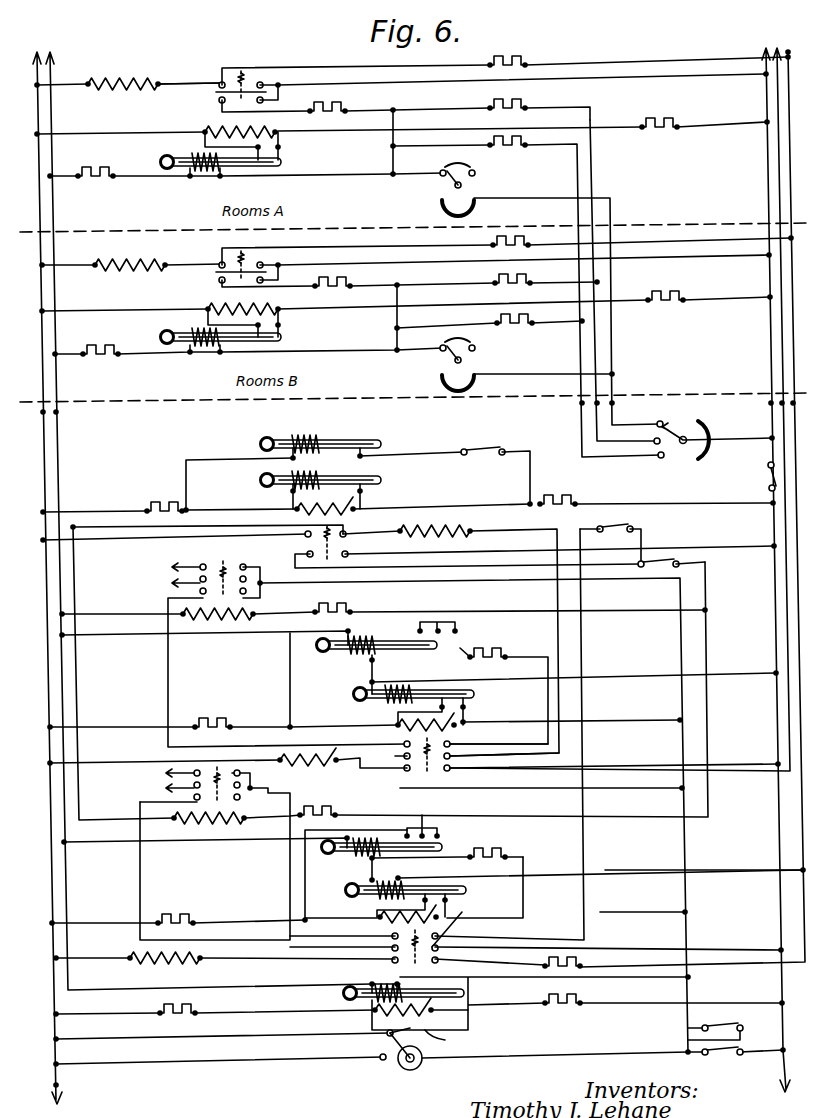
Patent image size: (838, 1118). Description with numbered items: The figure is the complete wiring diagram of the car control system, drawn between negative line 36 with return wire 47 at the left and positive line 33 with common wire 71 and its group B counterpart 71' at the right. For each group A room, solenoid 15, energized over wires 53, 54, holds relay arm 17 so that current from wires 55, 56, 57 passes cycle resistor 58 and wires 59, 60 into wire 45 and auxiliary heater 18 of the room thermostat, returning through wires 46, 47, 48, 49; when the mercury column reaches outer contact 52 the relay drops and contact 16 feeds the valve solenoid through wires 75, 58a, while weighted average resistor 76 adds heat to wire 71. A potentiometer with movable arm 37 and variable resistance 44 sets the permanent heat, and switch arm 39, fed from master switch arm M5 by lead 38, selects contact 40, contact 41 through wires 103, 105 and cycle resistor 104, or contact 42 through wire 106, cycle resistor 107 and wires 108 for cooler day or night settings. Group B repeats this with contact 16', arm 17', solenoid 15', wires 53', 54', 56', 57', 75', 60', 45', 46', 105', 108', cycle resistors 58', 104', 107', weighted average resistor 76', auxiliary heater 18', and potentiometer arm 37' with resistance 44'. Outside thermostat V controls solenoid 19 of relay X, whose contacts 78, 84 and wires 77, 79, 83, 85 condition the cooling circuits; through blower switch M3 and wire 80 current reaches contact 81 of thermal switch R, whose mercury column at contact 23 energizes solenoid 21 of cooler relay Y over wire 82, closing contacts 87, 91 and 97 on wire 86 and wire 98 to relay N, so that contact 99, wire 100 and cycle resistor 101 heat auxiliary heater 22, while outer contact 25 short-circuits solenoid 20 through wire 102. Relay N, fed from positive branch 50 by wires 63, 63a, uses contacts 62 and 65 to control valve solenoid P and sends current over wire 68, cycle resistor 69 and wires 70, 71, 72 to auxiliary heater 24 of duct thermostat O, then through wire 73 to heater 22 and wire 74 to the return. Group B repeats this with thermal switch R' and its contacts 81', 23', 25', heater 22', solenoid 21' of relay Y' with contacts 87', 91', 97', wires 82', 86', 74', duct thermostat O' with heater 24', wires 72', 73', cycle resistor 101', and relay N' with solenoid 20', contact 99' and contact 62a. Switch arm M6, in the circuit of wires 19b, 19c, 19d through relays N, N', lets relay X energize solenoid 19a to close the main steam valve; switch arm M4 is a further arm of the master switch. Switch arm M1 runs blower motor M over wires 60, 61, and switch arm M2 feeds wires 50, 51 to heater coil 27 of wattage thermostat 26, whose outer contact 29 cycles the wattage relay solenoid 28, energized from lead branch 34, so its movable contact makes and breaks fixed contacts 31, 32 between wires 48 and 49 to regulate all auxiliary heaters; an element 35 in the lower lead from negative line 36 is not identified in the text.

The negative line 36 is at (32, 56).
The wire 47 is at (78, 884).
The wire 71 is at (620, 458).
The wire 71' is at (749, 556).
The positive line 33 is at (716, 50).
The wire 59 is at (68, 84).
The wire 58a is at (177, 82).
The relay contact 16 is at (502, 67).
The wire 56 is at (513, 73).
The wire 75 is at (342, 59).
The weighted average resistor 76 is at (519, 56).
The relay arm 17 is at (245, 102).
The wire 57 is at (241, 107).
The cycle resistor 58 is at (350, 100).
The wire 55 is at (441, 98).
The wires 105 is at (484, 98).
The cycle resistor 104 is at (555, 101).
The wires 103 is at (584, 114).
The wire 54 is at (121, 123).
The solenoid 15 is at (215, 136).
The outer contact 52 is at (288, 162).
The wire 46 is at (246, 165).
The auxiliary heater 18 is at (189, 200).
The wire 60 is at (375, 142).
The wires 108 is at (441, 136).
The cycle resistor 107 is at (575, 292).
The wire 53 is at (522, 135).
The variable resistance 44 is at (481, 187).
The movable arm 37 is at (534, 306).
The wire 45 is at (328, 188).
The relay contact 16' is at (503, 257).
The wire 56' is at (514, 261).
The relay arm 17' is at (245, 278).
The wire 75' is at (386, 240).
The weighted average resistor 76' is at (523, 237).
The cycle resistor 58' is at (354, 277).
The wires 105' is at (465, 274).
The cycle resistor 104' is at (560, 271).
The wire 54' is at (125, 303).
The solenoid 15' is at (216, 320).
The wire 57' is at (296, 299).
The wire 46' is at (249, 364).
The auxiliary heater 18' is at (187, 371).
The wire 60' is at (379, 317).
The wires 108' is at (447, 317).
The cycle resistor 107' is at (538, 315).
The wire 53' is at (524, 289).
The variable resistance 44' is at (483, 364).
The movable arm 37' is at (508, 373).
The wire 45' is at (348, 368).
The wire 106 is at (612, 363).
The contact 40 is at (657, 410).
The contact 41 is at (654, 458).
The contact 42 is at (662, 458).
The three position switch arm 39 is at (686, 446).
The lead 38 is at (738, 436).
The switch arm M5 is at (768, 484).
The wire 83 is at (106, 520).
The solenoid 19 is at (296, 506).
The outside thermostat V is at (325, 484).
The switch arm M4 is at (486, 450).
The wire 85 is at (146, 538).
The relay X is at (210, 545).
The relay contact 84 is at (353, 546).
The relay contact 78 is at (358, 570).
The wire 77 is at (734, 546).
The wire 79 is at (460, 560).
The solenoid 19a is at (434, 523).
The switch arm M6 is at (610, 535).
The blower switch M3 is at (658, 578).
The wire 80 is at (710, 648).
The cooler relay Y' is at (209, 574).
The relay contact 87' is at (243, 550).
The wire 86' is at (467, 811).
The relay contact 97' is at (234, 670).
The relay contact 91' is at (266, 602).
The wire 82' is at (479, 604).
The actuating solenoid 21' is at (206, 654).
The wire 74' is at (257, 645).
The wire 102 is at (278, 669).
The auxiliary heater 22' is at (333, 664).
The thermal switch R' is at (400, 638).
The contact 81' is at (401, 635).
The contact 23' is at (451, 606).
The outer contact 25' is at (480, 612).
The wire 19d is at (557, 615).
The cycle resistor 101' is at (499, 688).
The wire 73' is at (572, 666).
The duct thermostat O' is at (424, 705).
The auxiliary heater 24' is at (343, 711).
The wire 72' is at (571, 707).
The relay contact 99' is at (494, 717).
The solenoid 20' is at (253, 731).
The relay N' is at (591, 751).
The wire 19b is at (578, 752).
The relay contact 62a is at (340, 759).
The relay contact 87 is at (256, 763).
The cooler relay Y is at (190, 785).
The relay contact 91 is at (254, 802).
The actuating solenoid 21 is at (235, 841).
The wire 82 is at (335, 805).
The relay contact 97 is at (207, 844).
The wire 74 is at (259, 851).
The wire 19c is at (302, 872).
The wire 100 is at (520, 888).
The thermal switch R is at (393, 835).
The contact 81 is at (384, 836).
The auxiliary heater 22 is at (323, 863).
The contact 23 is at (435, 814).
The outer contact 25 is at (460, 814).
The cycle resistor 101 is at (446, 848).
The wire 73 is at (345, 876).
The duct thermostat O is at (411, 899).
The auxiliary heater 24 is at (599, 869).
The solenoid 20 is at (380, 908).
The relay contact 62 is at (452, 925).
The relay N is at (535, 747).
The relay contact 99 is at (359, 932).
The wire 98 is at (147, 923).
The wire 63a is at (218, 922).
The wire 63 is at (644, 912).
The wire 72 is at (703, 858).
The wire 86 is at (541, 801).
The wire 50 is at (691, 854).
The relay contact 65 is at (384, 960).
The valve solenoid P is at (264, 958).
The wire 68 is at (516, 962).
The cycle resistor 69 is at (553, 970).
The wire 70 is at (717, 968).
The wire 51 is at (638, 978).
The auxiliary heater 27 is at (346, 996).
The wattage thermostat 26 is at (470, 992).
The interrupter 35 is at (236, 1012).
The wattage relay solenoid 28 is at (374, 1016).
The outer contact 29 is at (439, 1029).
The wire 48 is at (469, 1018).
The lead branch 34 is at (622, 1010).
The wire 49 is at (226, 1040).
The fixed contact 31 is at (390, 1034).
The fixed contact 32 is at (448, 1042).
The wire 61 is at (168, 1066).
The electric motor M is at (412, 1070).
The switch arm M2 is at (732, 1028).
The switch arm M1 is at (734, 1052).